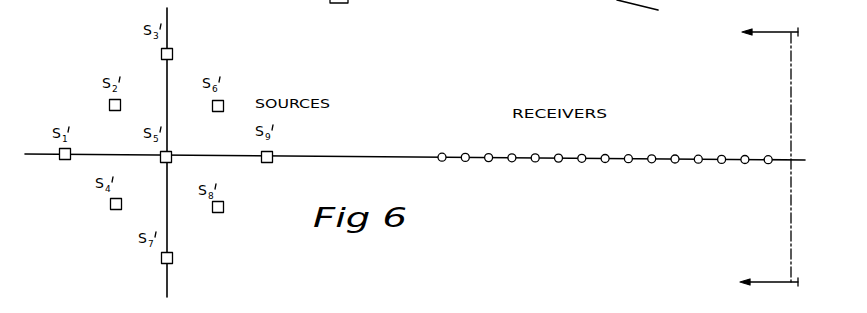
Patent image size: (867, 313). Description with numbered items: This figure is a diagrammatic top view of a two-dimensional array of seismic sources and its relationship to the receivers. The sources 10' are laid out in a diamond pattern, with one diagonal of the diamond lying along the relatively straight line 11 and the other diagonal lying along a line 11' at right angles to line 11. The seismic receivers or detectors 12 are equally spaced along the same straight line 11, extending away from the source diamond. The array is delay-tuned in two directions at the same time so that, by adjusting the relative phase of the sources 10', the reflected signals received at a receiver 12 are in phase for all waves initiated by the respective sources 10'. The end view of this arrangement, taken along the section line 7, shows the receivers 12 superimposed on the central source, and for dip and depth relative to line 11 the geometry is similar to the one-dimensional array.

The section line 7— 7 is at (759, 159).
The seismic sources 10' is at (156, 156).
The straight line 11 is at (415, 143).
The line at right angles to line 11 11' is at (191, 152).
The seismic receivers or detectors 12 is at (638, 143).